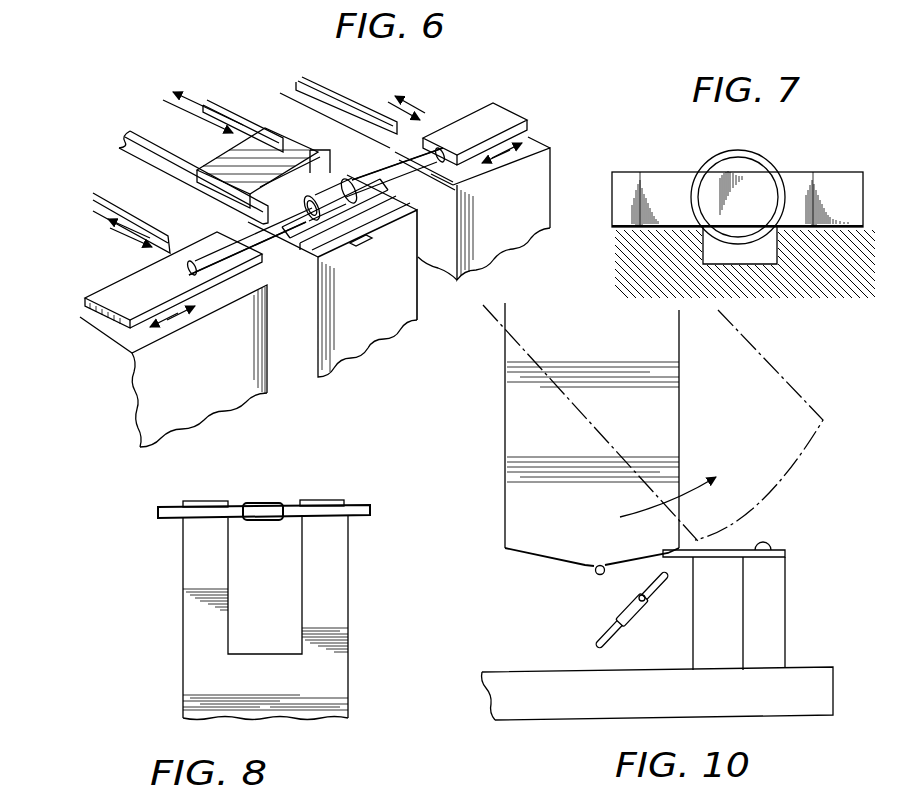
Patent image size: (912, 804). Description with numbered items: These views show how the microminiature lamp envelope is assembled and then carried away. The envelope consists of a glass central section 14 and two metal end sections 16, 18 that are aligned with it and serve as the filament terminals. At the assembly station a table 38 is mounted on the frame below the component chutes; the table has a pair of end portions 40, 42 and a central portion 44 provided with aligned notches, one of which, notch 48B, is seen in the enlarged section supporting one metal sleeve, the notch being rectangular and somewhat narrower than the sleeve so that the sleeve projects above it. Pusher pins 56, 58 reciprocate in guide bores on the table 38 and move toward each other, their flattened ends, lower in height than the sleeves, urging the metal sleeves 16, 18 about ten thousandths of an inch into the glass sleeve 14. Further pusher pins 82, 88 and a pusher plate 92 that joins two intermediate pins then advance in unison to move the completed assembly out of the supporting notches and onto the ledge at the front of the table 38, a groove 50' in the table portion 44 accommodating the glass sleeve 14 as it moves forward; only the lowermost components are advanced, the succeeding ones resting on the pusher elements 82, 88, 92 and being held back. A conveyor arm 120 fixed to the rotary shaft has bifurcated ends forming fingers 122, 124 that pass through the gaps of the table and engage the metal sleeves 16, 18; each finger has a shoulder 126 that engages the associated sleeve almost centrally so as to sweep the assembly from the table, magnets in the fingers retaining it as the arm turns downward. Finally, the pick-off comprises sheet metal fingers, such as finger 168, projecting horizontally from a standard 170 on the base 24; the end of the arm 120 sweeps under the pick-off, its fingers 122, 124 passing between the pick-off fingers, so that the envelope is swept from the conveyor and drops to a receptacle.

In FIG. 6, the central section 14 is at (340, 192).
In FIG. 8, the central section 14 is at (268, 512).
In FIG. 10, the central section 14 is at (626, 609).
In FIG. 6, the end section 16 is at (222, 262).
In FIG. 8, the end section 16 is at (215, 510).
In FIG. 10, the end section 16 is at (618, 637).
In FIG. 6, the end section 18 is at (393, 168).
In FIG. 7, the end section 18 is at (763, 157).
In FIG. 8, the end section 18 is at (330, 505).
In FIG. 10, the end section 18 is at (658, 588).
In FIG. 10, the base 24 is at (815, 692).
In FIG. 6, the table 38 is at (347, 338).
In FIG. 7, the table 38 is at (839, 290).
In FIG. 6, the end portion 40 is at (250, 386).
In FIG. 6, the end portion 42 is at (517, 232).
In FIG. 6, the central portion 44 is at (398, 308).
In FIG. 7, the notch 48B is at (758, 253).
In FIG. 6, the groove 50' is at (379, 254).
In FIG. 6, the pusher pin 56 is at (147, 304).
In FIG. 6, the pusher pin 58 is at (500, 118).
In FIG. 7, the pusher pin 58 is at (838, 185).
In FIG. 6, the pusher pin 82 is at (128, 142).
In FIG. 6, the pusher pin 88 is at (356, 98).
In FIG. 6, the pusher plate 92 is at (247, 150).
In FIG. 8, the arm 120 is at (325, 675).
In FIG. 10, the arm 120 is at (548, 500).
In FIG. 8, the finger 122 is at (207, 570).
In FIG. 8, the finger 124 is at (328, 582).
In FIG. 10, the shoulder 126 is at (593, 570).
In FIG. 10, the pick-off finger 168 is at (678, 556).
In FIG. 10, the standard 170 is at (765, 620).